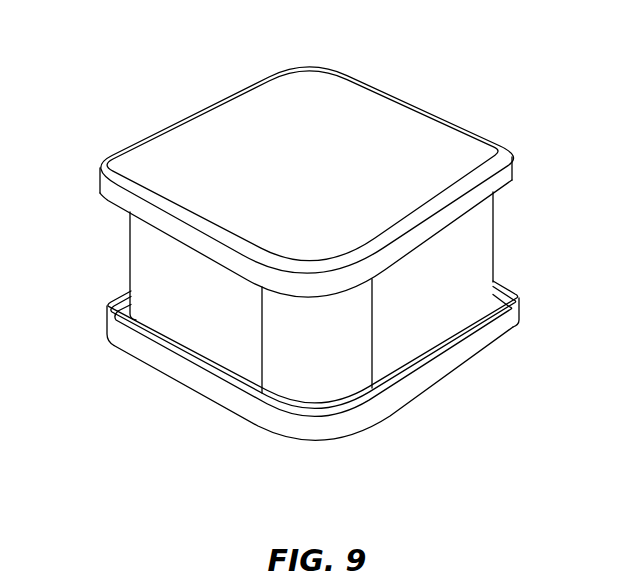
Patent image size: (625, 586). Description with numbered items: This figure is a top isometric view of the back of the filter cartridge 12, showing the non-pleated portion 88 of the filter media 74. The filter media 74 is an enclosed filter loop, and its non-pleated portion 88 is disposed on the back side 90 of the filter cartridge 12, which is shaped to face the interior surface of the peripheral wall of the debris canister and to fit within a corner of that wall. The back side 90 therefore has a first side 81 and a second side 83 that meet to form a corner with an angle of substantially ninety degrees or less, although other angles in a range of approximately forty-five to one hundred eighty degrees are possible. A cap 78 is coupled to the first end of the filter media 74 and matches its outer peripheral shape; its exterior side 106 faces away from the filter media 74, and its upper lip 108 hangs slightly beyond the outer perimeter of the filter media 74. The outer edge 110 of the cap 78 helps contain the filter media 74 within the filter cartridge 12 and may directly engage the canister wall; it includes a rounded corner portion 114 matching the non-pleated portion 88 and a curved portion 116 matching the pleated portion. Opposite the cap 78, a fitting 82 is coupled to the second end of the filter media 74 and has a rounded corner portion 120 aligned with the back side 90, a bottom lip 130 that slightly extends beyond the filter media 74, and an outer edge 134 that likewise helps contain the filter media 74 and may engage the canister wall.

The filter cartridge 12 is at (521, 113).
The filter media 74 is at (494, 250).
The cap 78 is at (400, 116).
The first side 81 is at (178, 307).
The fitting 82 is at (207, 383).
The second side 83 is at (410, 333).
The non-pleated portion 88 is at (453, 293).
The back side 90 is at (292, 368).
The exterior side 106 is at (318, 172).
The upper lip 108 is at (107, 200).
The outer edge 110 is at (510, 172).
The rounded corner portion 114 is at (322, 299).
The curved portion 116 is at (301, 71).
The rounded corner portion 120 is at (322, 438).
The bottom lip 130 is at (107, 306).
The outer edge 134 is at (372, 412).